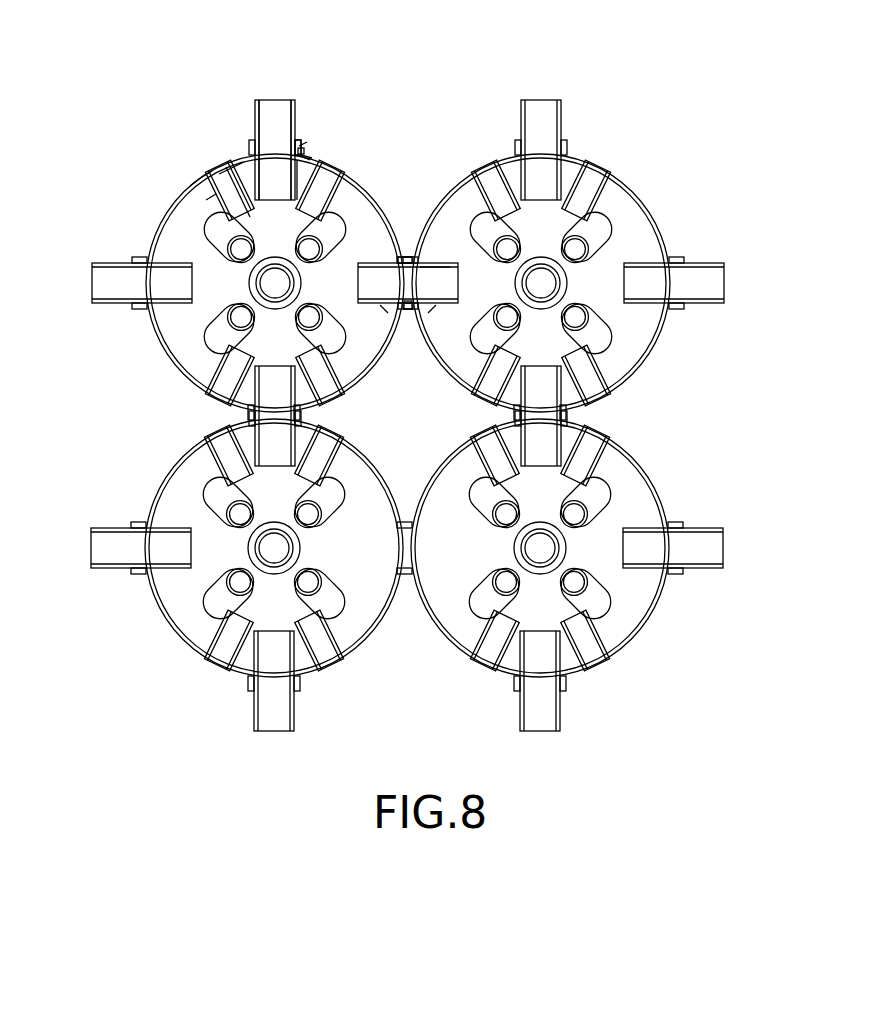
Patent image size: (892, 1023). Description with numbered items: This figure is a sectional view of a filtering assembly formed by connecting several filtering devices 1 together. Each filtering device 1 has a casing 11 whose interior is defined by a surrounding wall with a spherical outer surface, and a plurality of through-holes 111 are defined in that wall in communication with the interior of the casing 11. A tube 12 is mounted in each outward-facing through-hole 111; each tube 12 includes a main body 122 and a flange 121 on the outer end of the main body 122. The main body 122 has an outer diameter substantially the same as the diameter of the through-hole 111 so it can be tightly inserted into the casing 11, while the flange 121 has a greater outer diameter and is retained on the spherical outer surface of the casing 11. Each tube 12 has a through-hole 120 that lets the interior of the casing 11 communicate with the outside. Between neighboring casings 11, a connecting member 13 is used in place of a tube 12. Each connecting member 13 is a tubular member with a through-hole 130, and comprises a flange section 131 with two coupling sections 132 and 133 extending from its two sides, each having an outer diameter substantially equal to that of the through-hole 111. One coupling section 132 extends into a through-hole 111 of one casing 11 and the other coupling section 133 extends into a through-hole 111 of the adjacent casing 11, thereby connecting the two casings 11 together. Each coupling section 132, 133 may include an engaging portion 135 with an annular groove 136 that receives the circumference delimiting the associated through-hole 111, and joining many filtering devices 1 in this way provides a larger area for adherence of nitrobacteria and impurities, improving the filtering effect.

The filtering device 1 is at (145, 233).
The casing 11 is at (166, 353).
The through-hole 111 is at (203, 175).
The tube 12 is at (205, 153).
The through-hole 120 is at (220, 170).
The flange 121 is at (242, 170).
The main body 122 is at (214, 198).
The connecting member 13 is at (258, 99).
The through-hole 130 is at (278, 108).
The flange section 131 is at (304, 152).
The coupling section 132 is at (301, 150).
The coupling section 133 is at (297, 175).
The engaging portion 135 is at (305, 152).
The annular groove 136 is at (304, 150).